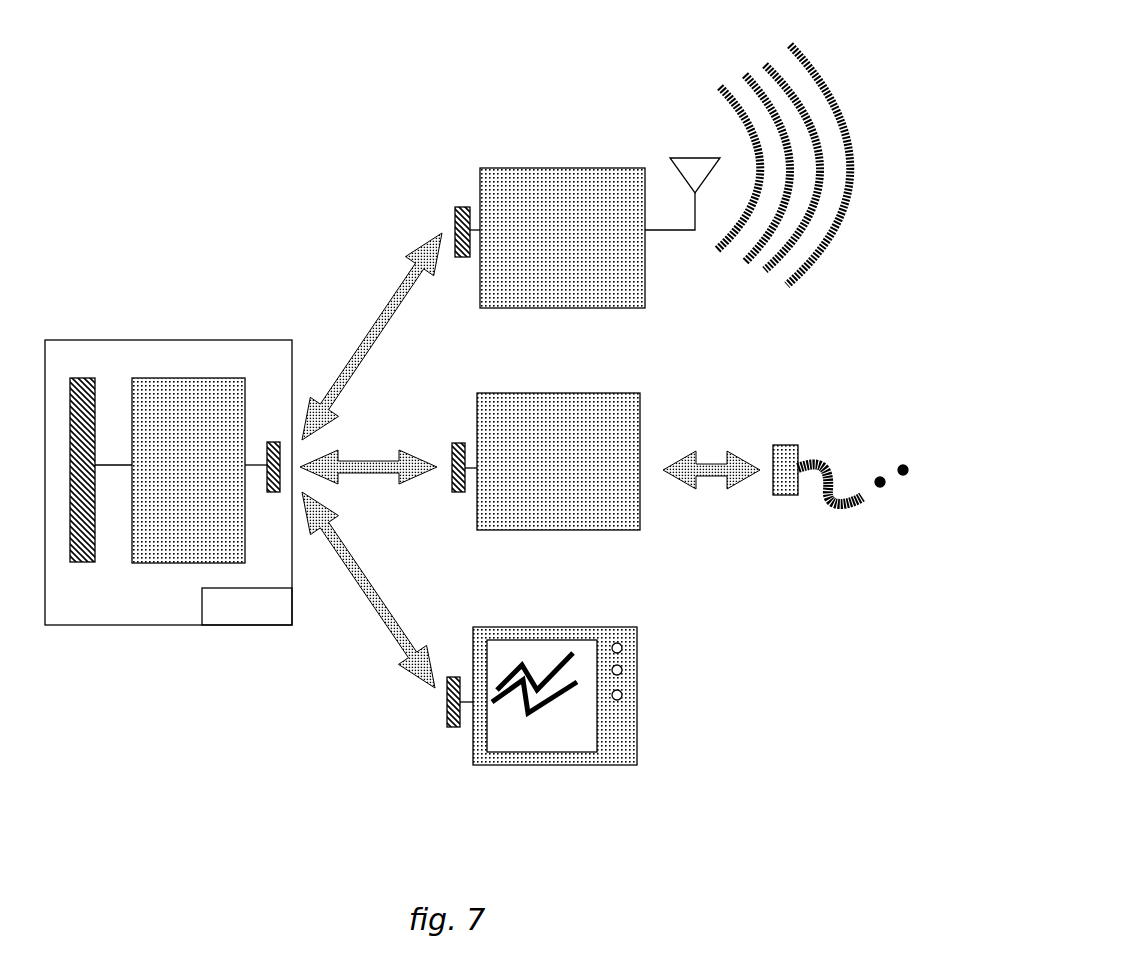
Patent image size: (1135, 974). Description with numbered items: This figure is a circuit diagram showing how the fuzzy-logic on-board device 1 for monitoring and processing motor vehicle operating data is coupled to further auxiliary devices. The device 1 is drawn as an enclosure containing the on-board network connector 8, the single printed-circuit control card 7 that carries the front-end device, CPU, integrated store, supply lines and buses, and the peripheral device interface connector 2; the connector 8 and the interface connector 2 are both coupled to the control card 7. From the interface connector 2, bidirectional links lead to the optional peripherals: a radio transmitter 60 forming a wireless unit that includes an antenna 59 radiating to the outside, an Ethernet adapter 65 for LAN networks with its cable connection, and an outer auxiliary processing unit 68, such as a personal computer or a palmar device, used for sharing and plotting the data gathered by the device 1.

The fuzzy-logic on-board device 1 is at (125, 645).
The peripheral device interface connector 2 is at (277, 425).
The control card 7 is at (171, 362).
The on-board network connector 8 is at (86, 362).
The antenna 59 is at (695, 140).
The radio transmitter 60 is at (492, 155).
The Ethernet adapter 65 is at (650, 378).
The outer auxiliary processing unit 68 is at (655, 688).